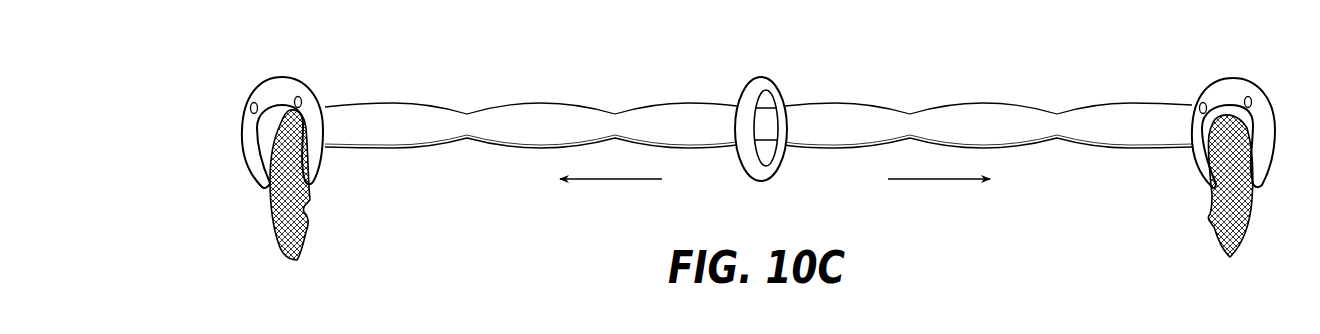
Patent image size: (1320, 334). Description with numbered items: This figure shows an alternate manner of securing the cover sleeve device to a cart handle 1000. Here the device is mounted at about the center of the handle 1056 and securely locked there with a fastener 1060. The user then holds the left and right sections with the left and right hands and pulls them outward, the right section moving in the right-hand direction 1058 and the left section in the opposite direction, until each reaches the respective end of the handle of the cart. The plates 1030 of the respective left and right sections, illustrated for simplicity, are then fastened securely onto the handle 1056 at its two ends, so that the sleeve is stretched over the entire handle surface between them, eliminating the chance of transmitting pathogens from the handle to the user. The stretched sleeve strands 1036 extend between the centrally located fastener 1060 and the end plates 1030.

The handle of a cart 1000 is at (352, 50).
The plates 1030 is at (243, 125).
The twisted strands 1036 is at (930, 110).
The handle 1056 is at (308, 207).
The right-hand direction 1058 is at (775, 195).
The fastener 1060 is at (757, 182).